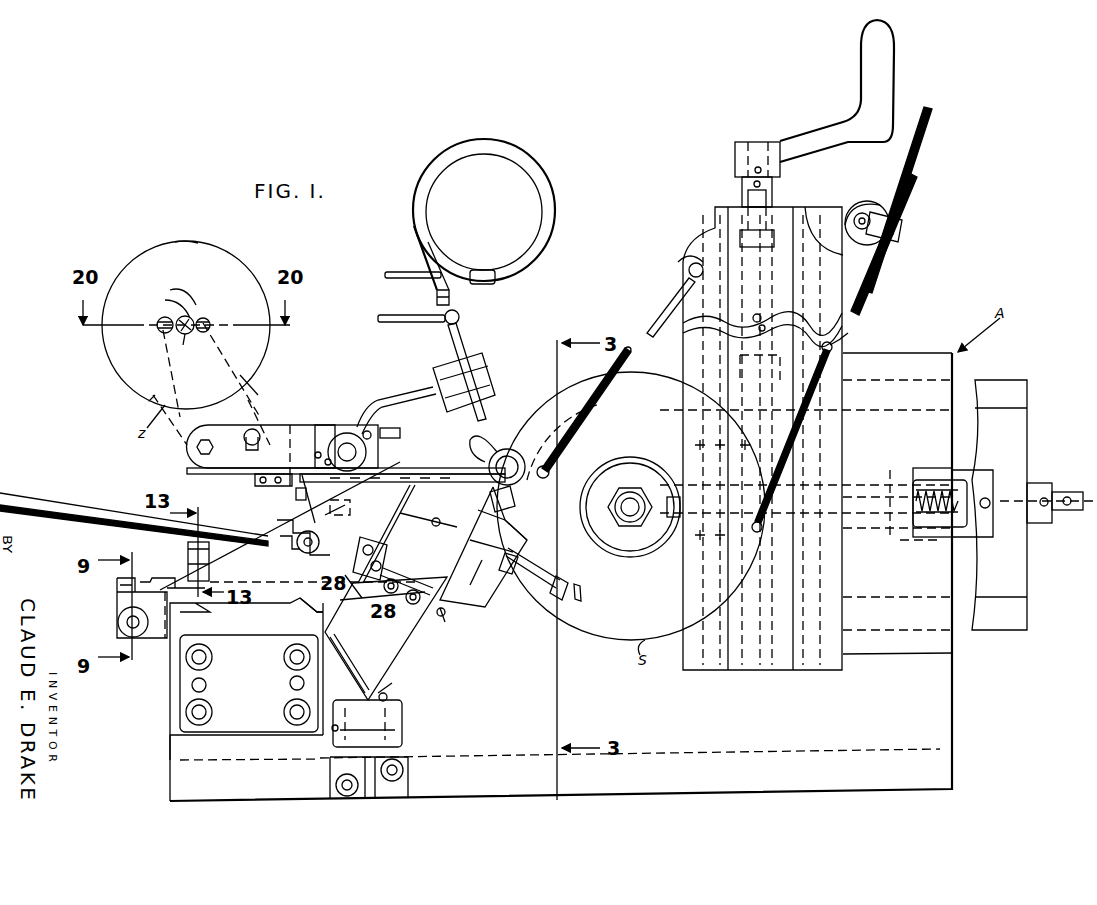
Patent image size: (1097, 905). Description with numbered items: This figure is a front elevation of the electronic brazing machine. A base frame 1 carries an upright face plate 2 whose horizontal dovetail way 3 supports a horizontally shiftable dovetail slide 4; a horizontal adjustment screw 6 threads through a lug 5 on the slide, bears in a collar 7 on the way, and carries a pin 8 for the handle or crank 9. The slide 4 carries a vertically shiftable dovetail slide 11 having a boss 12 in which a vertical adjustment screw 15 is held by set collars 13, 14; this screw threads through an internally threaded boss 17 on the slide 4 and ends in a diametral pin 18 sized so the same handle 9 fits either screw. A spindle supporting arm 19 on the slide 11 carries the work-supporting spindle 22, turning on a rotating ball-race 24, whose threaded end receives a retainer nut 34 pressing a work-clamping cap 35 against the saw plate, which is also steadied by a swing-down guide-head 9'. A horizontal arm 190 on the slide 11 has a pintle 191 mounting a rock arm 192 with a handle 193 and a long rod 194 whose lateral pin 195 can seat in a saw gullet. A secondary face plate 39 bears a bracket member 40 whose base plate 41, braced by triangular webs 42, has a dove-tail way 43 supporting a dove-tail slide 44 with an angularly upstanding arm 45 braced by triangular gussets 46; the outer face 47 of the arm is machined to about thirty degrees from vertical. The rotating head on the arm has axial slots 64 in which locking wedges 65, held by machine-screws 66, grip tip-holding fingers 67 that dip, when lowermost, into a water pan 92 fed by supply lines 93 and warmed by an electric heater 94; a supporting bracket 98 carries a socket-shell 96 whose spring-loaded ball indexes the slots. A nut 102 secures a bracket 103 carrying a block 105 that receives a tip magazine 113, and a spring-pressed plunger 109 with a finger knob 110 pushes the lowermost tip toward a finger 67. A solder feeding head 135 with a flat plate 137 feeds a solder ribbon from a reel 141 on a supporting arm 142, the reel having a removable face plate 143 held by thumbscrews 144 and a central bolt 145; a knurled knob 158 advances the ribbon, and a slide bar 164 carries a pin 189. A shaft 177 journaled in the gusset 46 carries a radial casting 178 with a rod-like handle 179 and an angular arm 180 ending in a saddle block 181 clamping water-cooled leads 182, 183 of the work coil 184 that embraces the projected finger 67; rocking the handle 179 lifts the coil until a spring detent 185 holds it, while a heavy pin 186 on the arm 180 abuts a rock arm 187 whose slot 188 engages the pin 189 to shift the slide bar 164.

The base frame 1 is at (945, 742).
The face plate 2 is at (948, 666).
The dovetail way 3 is at (1022, 393).
The dovetail slide 4 is at (950, 366).
The lug 5 is at (892, 537).
The horizontal adjustment screw 6 is at (985, 498).
The collar 7 is at (1030, 522).
The pin 8 is at (1068, 496).
The handle 9 is at (843, 91).
The guide-head 9' is at (556, 480).
The dovetail slide 11 is at (838, 665).
The boss 12 is at (785, 212).
The set collar 13 is at (742, 190).
The set collar 14 is at (740, 238).
The vertical adjustment screw 15 is at (760, 322).
The internally threaded boss 17 is at (836, 336).
The diametral pin 18 is at (758, 167).
The spindle supporting arm 19 is at (634, 354).
The work-supporting spindle 22 is at (622, 520).
The rotating ball-race 24 is at (655, 310).
The retainer nut 34 is at (630, 527).
The work-clamping cap 35 is at (648, 470).
The secondary face plate 39 is at (170, 742).
The bracket member 40 is at (228, 740).
The base plate 41 is at (240, 630).
The triangular webs 42 is at (180, 704).
The dove-tail way 43 is at (180, 622).
The dove-tail slide 44 is at (268, 627).
The arm 45 is at (432, 500).
The triangular gussets 46 is at (252, 545).
The outer face 47 is at (400, 513).
The axial slots 64 is at (400, 620).
The locking wedge 65 is at (395, 645).
The machine-screws 66 is at (413, 590).
The tip-holding fingers 67 is at (440, 520).
The pan 92 is at (402, 718).
The supply lines 93 is at (386, 693).
The electric heater 94 is at (328, 758).
The socket-shell 96 is at (394, 546).
The supporting bracket 98 is at (315, 612).
The nut 102 is at (505, 600).
The bracket 103 is at (445, 625).
The block 105 is at (520, 528).
The plunger 109 is at (552, 598).
The finger knob 110 is at (578, 602).
The tip magazine 113 is at (512, 498).
The solder feeding head 135 is at (334, 425).
The flat plate 137 is at (220, 470).
The reel 141 is at (190, 242).
The supporting arm 142 is at (252, 392).
The removable face plate 143 is at (232, 264).
The thumbscrews 144 is at (207, 361).
The central bolt 145 is at (193, 348).
The knurled knob 158 is at (348, 433).
The slide bar 164 is at (255, 476).
The shaft 177 is at (306, 553).
The radial casting 178 is at (286, 528).
The handle 179 is at (56, 506).
The angular arm 180 is at (384, 403).
The saddle block 181 is at (488, 368).
The water-cooled lead 182 is at (392, 322).
The water-cooled lead 183 is at (392, 272).
The work coil 184 is at (504, 448).
The spring detent 185 is at (188, 552).
The heavy pin 186 is at (348, 508).
The rock arm 187 is at (306, 500).
The slot 188 is at (292, 440).
The pin 189 is at (318, 450).
The horizontal arm 190 is at (835, 215).
The pintle 191 is at (872, 219).
The rock arm 192 is at (898, 235).
The handle 193 is at (925, 118).
The long rod 194 is at (877, 280).
The lateral pin 195 is at (762, 526).